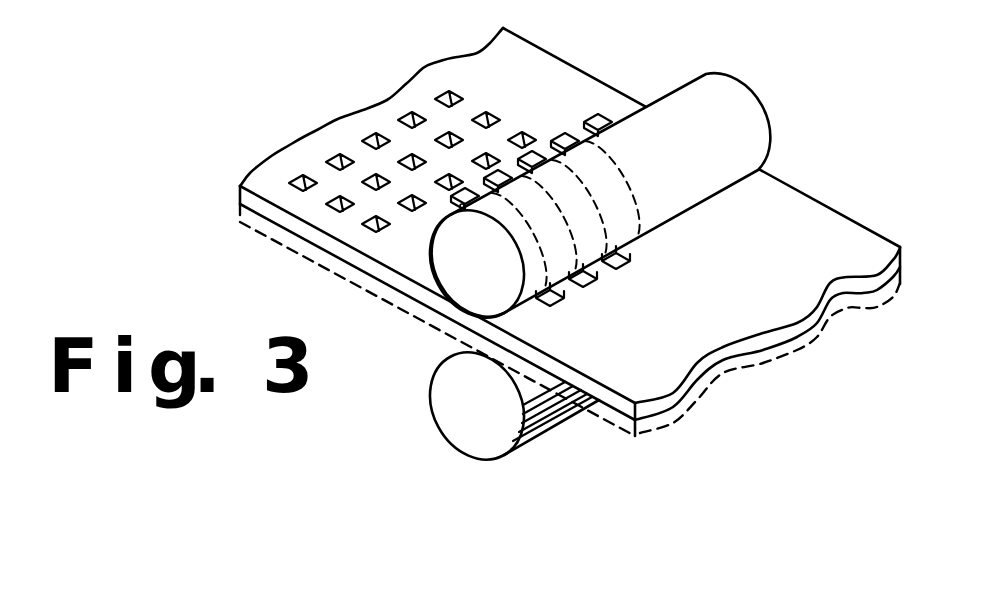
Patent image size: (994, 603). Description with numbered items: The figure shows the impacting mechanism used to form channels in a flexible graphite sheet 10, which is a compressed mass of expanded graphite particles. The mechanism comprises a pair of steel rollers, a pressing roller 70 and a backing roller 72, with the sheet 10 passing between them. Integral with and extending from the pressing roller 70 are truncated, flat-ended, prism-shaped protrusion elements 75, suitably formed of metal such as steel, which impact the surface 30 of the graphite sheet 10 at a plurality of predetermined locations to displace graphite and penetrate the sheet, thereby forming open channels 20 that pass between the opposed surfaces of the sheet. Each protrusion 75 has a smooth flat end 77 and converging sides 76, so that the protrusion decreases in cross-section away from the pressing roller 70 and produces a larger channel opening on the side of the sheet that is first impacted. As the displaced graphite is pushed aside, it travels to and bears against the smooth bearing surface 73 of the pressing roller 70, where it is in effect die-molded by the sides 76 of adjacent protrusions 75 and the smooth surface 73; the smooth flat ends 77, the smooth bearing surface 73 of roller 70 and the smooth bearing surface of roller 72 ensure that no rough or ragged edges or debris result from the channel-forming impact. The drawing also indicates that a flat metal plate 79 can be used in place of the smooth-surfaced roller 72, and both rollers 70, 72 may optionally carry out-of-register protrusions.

The flexible graphite sheet 10 is at (829, 205).
The channels 20 is at (373, 133).
The surface 30 is at (567, 93).
The pressing roller 70 is at (723, 90).
The roller 72 is at (460, 380).
The smooth bearing surface 73 is at (550, 157).
The protrusion elements 75 is at (533, 417).
The converging sides 76 is at (603, 117).
The smooth flat ends 77 is at (460, 205).
The flat metal plate 79 is at (720, 367).